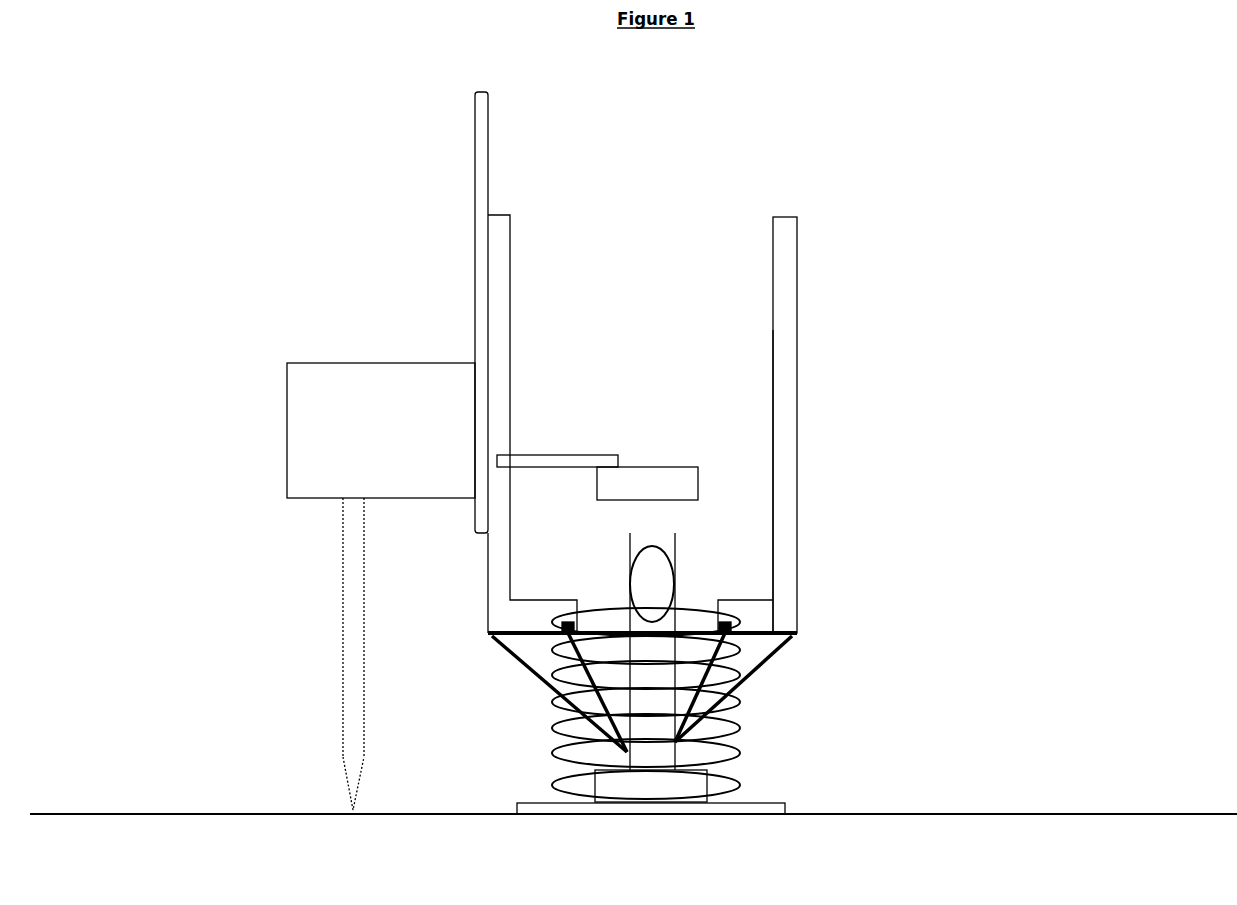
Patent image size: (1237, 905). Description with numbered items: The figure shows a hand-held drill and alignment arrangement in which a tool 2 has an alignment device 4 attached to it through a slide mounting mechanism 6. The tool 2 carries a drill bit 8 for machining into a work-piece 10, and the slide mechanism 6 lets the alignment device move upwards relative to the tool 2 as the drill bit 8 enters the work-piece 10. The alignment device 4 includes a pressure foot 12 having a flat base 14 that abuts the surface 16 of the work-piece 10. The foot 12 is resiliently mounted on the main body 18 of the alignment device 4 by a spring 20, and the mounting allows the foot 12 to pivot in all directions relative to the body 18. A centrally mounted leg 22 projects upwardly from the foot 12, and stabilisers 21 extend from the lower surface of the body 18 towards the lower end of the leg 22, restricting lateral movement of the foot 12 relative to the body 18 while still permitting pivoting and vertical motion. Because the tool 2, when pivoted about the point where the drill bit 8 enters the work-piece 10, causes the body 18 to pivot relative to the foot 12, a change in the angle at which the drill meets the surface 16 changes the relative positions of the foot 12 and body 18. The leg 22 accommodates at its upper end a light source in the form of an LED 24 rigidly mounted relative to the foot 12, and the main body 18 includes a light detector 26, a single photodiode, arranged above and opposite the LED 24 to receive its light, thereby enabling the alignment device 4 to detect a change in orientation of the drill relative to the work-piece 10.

The tool 2 is at (310, 422).
The alignment device 4 is at (785, 277).
The slide mounting mechanism 6 is at (488, 127).
The drill bit 8 is at (353, 643).
The work-piece 10 is at (465, 897).
The pressure foot 12 is at (680, 782).
The flat base 14 is at (680, 818).
The surface 16 is at (960, 808).
The main body 18 is at (785, 380).
The spring 20 is at (701, 645).
The stabilisers 21 is at (492, 642).
The leg 22 is at (655, 689).
The LED 24 is at (665, 579).
The light detector 26 is at (685, 479).